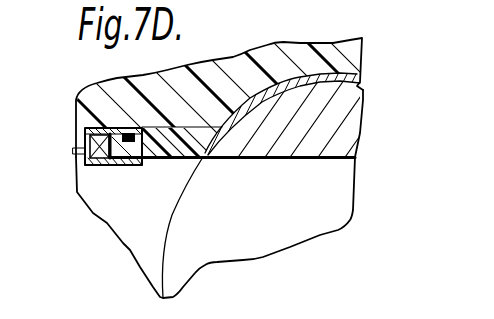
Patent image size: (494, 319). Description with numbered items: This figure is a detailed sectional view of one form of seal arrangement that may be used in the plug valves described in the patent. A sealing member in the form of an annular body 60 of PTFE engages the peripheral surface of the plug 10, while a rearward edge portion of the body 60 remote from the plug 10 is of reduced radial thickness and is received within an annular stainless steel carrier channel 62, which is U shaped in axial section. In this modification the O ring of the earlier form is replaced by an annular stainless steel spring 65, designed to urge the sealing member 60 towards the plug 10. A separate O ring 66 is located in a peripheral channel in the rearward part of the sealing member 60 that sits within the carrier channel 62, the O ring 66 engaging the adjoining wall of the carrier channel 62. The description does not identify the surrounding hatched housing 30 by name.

The plug 10 is at (277, 133).
The housing 30 is at (283, 79).
The annular body 60 is at (173, 150).
The carrier channel 62 is at (88, 129).
The annular stainless steel spring 65 is at (110, 160).
The O ring 66 is at (127, 134).